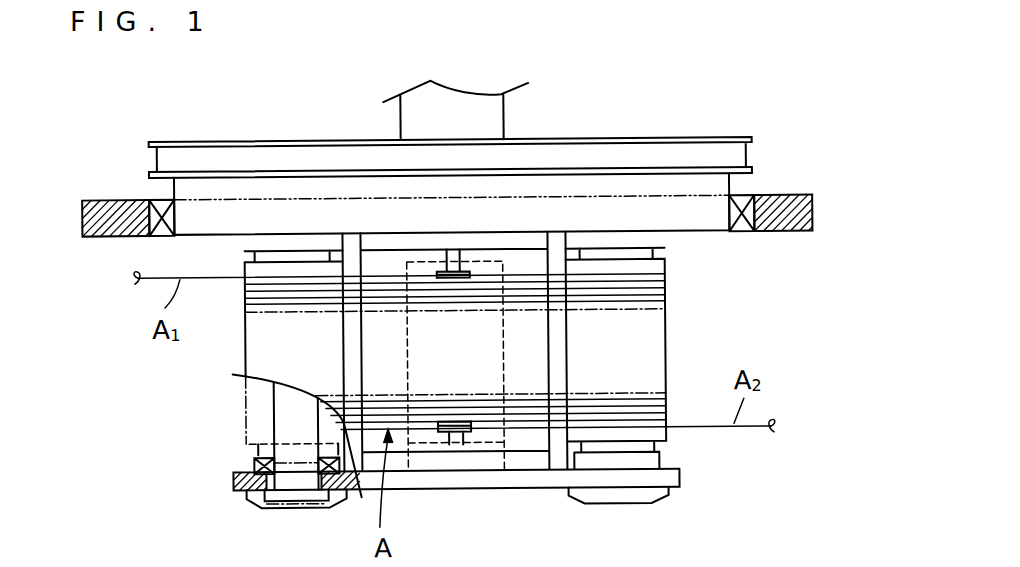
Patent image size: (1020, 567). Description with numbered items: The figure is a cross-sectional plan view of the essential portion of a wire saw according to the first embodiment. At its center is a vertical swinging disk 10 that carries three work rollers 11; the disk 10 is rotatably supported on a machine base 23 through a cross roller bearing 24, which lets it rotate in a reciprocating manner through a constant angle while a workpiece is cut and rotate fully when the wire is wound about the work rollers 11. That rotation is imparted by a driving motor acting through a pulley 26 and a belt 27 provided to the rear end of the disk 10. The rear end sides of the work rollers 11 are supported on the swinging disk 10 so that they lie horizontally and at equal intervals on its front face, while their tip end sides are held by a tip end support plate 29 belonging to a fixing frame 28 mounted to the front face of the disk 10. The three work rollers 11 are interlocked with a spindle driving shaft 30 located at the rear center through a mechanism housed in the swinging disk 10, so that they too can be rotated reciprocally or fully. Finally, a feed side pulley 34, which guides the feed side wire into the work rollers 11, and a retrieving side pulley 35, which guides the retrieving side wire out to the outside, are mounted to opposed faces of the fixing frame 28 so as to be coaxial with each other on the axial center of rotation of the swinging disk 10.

The vertical swinging disk 10 is at (700, 220).
The work rollers 11 is at (260, 352).
The machine base 23 is at (813, 218).
The cross roller bearing 24 is at (746, 201).
The pulley 26 is at (692, 142).
The belt 27 is at (606, 160).
The fixing frame 28 is at (526, 464).
The tip end support plate 29 is at (673, 480).
The spindle driving shaft 30 is at (475, 103).
The feed side pulley 34 is at (443, 272).
The retrieving side pulley 35 is at (464, 434).